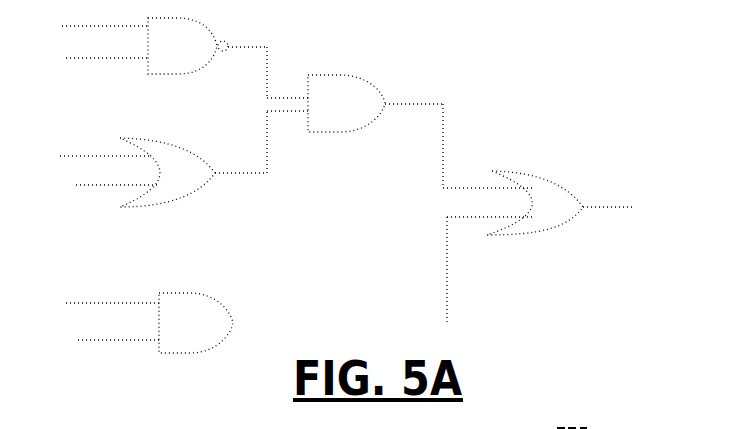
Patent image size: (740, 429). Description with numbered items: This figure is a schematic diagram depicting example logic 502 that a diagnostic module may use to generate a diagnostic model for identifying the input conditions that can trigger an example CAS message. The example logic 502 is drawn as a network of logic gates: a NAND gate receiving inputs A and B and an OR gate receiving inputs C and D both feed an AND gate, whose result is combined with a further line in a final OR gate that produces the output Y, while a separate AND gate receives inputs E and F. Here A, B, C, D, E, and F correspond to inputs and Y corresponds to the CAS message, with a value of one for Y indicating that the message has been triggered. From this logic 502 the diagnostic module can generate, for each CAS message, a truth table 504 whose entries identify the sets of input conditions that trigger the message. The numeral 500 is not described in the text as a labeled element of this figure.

The logic circuit inputs and output 500 is at (329, 182).
The example logic 502 is at (441, 42).
The truth table 504 is at (572, 428).